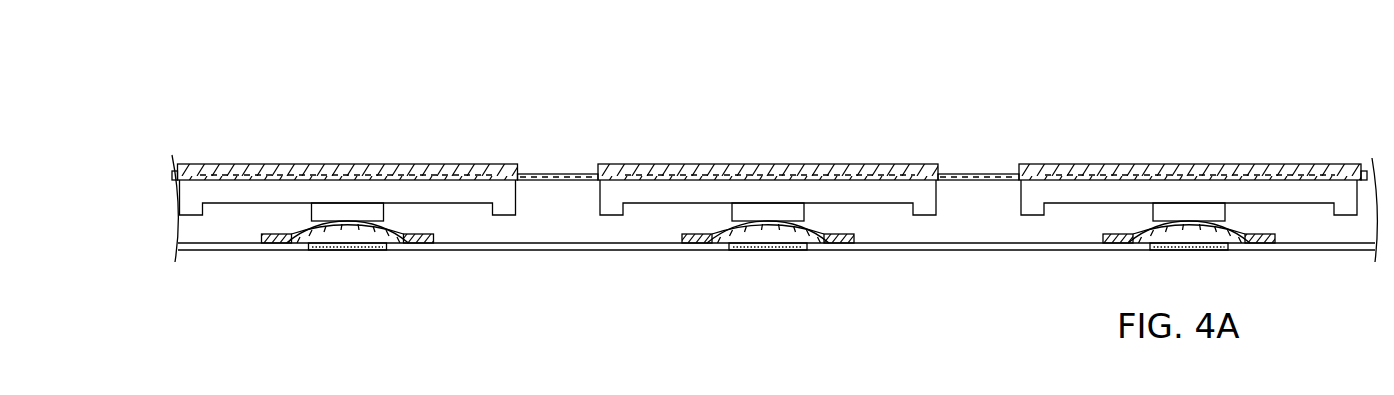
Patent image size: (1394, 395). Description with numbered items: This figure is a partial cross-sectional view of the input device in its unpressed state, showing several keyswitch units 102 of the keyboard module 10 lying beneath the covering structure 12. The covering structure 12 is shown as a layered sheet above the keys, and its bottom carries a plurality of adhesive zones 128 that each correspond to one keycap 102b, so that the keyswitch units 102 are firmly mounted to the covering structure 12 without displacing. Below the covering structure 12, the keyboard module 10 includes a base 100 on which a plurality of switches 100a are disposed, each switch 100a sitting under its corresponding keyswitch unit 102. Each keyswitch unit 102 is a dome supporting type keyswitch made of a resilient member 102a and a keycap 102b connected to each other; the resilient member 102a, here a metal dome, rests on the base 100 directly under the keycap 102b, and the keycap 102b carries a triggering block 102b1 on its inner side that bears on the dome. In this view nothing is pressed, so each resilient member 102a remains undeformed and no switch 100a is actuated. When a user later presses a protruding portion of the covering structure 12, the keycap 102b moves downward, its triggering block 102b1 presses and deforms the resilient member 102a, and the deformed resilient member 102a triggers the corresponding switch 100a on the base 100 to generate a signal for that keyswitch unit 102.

The keyboard module 10 is at (198, 228).
The covering structure 12 is at (908, 165).
The adhesive zones 128 is at (773, 179).
The keyswitch unit 102 is at (732, 76).
The resilient member 102a is at (727, 225).
The keycap 102b is at (636, 192).
The protrusion 102b1 is at (763, 212).
The base 100 is at (963, 250).
The switch 100a is at (790, 250).